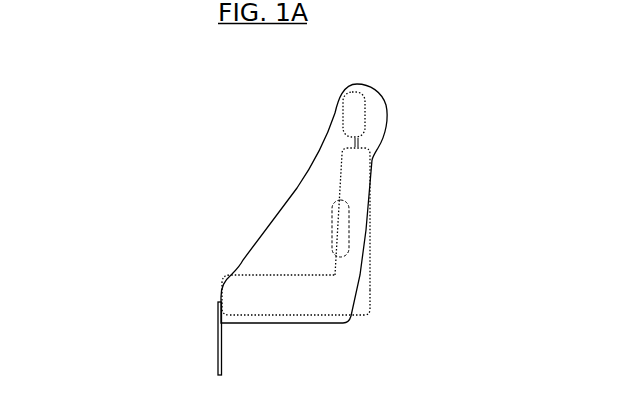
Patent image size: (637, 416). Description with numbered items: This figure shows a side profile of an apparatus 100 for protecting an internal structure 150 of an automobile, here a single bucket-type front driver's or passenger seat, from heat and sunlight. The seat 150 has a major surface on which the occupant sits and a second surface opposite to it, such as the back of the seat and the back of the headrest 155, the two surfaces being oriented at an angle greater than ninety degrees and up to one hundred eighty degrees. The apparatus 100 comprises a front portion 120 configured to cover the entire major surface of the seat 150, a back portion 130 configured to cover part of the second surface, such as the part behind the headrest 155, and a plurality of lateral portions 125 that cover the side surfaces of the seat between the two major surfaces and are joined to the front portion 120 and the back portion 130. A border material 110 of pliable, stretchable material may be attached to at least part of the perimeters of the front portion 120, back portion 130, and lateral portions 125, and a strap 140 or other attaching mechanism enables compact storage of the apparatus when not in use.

The apparatus 100 is at (156, 94).
The border material 110 is at (363, 260).
The front portion 120 is at (295, 188).
The lateral portions 125 is at (293, 233).
The back portion 130 is at (390, 124).
The strap 140 is at (217, 328).
The internal structure 150 is at (370, 295).
The headrest 155 is at (337, 114).